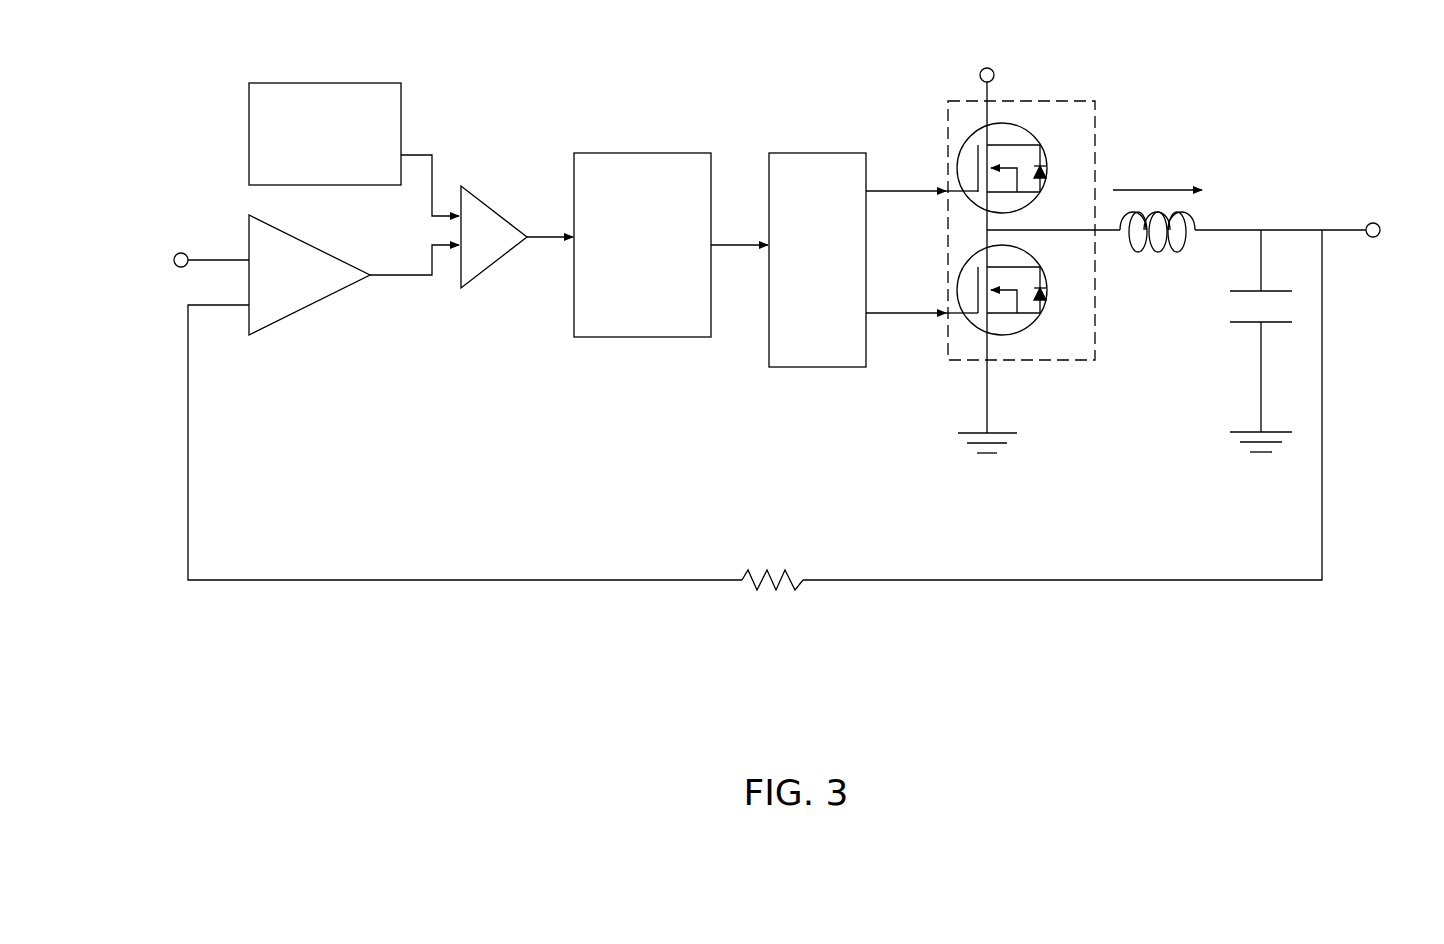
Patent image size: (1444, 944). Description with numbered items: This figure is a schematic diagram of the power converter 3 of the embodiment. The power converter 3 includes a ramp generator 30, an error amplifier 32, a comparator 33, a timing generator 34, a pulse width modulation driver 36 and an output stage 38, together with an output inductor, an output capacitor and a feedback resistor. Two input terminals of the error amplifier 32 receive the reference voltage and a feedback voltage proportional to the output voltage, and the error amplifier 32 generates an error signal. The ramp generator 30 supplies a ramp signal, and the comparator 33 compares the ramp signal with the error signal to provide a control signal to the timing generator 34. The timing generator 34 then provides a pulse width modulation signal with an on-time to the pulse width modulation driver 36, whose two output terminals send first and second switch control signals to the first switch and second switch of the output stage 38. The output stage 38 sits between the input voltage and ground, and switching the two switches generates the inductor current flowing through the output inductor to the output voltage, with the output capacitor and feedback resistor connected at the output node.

The power converter 3 is at (199, 82).
The ramp generator 30 is at (312, 180).
The error amplifier 32 is at (277, 288).
The comparator 33 is at (471, 250).
The timing generator 34 is at (630, 289).
The pulse width modulation (PWM) driver 36 is at (805, 308).
The output stage 38 is at (1066, 101).